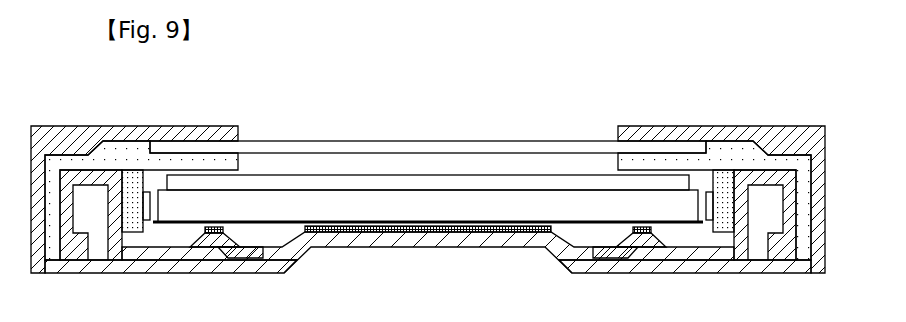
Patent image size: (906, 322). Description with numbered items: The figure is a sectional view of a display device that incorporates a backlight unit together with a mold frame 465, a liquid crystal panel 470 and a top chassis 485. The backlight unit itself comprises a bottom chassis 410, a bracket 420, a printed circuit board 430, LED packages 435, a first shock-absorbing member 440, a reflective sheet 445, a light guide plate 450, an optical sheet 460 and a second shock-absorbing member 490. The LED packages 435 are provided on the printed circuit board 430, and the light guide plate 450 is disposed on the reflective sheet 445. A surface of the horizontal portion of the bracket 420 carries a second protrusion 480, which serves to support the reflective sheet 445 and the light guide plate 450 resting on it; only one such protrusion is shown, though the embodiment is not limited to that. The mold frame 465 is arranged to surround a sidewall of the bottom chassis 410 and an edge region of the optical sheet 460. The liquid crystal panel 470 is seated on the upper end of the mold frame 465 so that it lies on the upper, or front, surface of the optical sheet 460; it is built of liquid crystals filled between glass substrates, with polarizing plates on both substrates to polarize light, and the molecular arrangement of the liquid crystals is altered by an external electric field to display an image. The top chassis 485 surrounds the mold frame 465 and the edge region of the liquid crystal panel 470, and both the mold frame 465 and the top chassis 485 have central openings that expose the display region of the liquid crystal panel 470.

The bottom chassis 410 is at (150, 263).
The bracket 420 is at (121, 258).
The printed circuit board 430 is at (133, 178).
The LED packages 435 is at (152, 191).
The first shock-absorbing member 440 is at (348, 233).
The reflective sheet 445 is at (180, 259).
The light guide plate 450 is at (363, 198).
The optical sheet 460 is at (325, 181).
The mold frame 465 is at (117, 148).
The liquid crystal panel 470 is at (280, 143).
The second protrusion 480 is at (216, 252).
The top chassis 485 is at (60, 132).
The second shock-absorbing member 490 is at (224, 229).